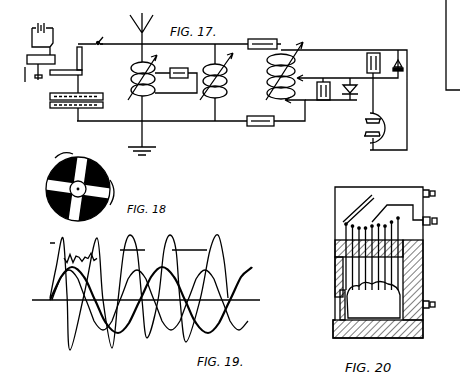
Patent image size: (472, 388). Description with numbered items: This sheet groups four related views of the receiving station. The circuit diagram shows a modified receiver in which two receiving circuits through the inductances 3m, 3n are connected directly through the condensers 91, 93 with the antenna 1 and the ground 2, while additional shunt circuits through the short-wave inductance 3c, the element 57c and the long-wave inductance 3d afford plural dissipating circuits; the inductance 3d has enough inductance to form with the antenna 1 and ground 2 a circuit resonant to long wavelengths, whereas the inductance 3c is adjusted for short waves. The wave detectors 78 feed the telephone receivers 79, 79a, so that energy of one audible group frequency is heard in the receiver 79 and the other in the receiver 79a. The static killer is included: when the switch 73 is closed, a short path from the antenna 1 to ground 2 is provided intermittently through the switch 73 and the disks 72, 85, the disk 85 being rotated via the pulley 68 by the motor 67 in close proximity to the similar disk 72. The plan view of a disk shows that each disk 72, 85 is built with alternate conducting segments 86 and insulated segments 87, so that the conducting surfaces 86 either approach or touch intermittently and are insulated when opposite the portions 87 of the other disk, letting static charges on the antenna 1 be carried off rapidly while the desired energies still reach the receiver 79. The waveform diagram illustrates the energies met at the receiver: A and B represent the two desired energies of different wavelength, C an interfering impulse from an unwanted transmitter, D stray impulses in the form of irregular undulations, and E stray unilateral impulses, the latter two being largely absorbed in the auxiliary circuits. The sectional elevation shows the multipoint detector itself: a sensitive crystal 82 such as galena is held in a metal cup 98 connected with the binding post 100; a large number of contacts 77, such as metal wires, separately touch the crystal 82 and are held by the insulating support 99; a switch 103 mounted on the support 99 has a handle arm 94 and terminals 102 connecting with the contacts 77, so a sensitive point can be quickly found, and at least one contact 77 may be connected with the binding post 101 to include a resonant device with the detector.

In FIG. 17, the antenna 1 is at (153, 17).
In FIG. 17, the ground 2 is at (144, 152).
In FIG. 17, the shunt inductance 3c is at (140, 77).
In FIG. 17, the shunt inductance 3d is at (222, 82).
In FIG. 17, the receiving circuit inductance 3m is at (293, 71).
In FIG. 17, the receiving circuit inductance 3n is at (291, 104).
In FIG. 17, the shunt circuit element 57c is at (176, 73).
In FIG. 17, the motor 67 is at (45, 57).
In FIG. 17, the pulley 68 is at (76, 84).
In FIG. 17, the disk 72 is at (100, 110).
In FIG. 17, the switch 73 is at (97, 41).
In FIG. 17, the wave detector 78 is at (396, 51).
In FIG. 17, the telephone receiver 79 is at (378, 124).
In FIG. 17, the telephone receiver 79a is at (361, 139).
In FIG. 17, the disk 85 is at (106, 88).
In FIG. 18, the conducting segments 86 is at (50, 190).
In FIG. 18, the insulated segments 87 is at (107, 163).
In FIG. 17, the condenser 91 is at (262, 35).
In FIG. 17, the condenser 93 is at (260, 132).
In FIG. 19, the desired energy A is at (90, 323).
In FIG. 19, the desired energy B is at (101, 290).
In FIG. 19, the interfering impulse C is at (58, 328).
In FIG. 19, the stray impulses D is at (118, 345).
In FIG. 19, the stray unilateral impulses E is at (122, 242).
In FIG. 20, the contacts 77 is at (348, 273).
In FIG. 20, the sensitive crystal 82 is at (373, 300).
In FIG. 20, the handle arm 94 is at (360, 200).
In FIG. 20, the metal cup 98 is at (338, 303).
In FIG. 20, the insulating support 99 is at (424, 333).
In FIG. 20, the binding post 100 is at (441, 246).
In FIG. 20, the binding post 101 is at (443, 221).
In FIG. 20, the terminals 102 is at (345, 227).
In FIG. 20, the switch 103 is at (387, 187).